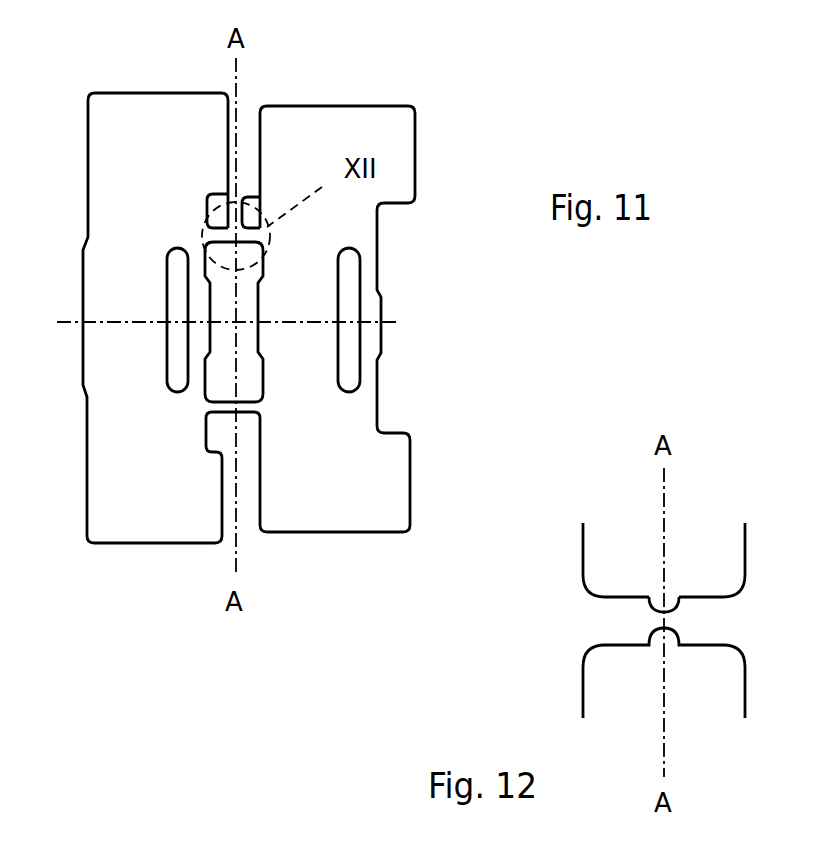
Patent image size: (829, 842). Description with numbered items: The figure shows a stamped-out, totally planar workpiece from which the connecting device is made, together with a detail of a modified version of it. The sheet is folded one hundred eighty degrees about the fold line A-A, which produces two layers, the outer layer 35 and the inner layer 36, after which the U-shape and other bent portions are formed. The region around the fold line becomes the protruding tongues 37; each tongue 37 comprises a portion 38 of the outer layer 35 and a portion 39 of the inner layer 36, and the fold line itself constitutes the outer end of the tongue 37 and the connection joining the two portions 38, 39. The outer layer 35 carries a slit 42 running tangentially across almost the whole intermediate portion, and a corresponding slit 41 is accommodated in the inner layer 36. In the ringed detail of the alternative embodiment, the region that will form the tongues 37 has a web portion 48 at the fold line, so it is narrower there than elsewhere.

In FIG. 11, the outer layer 35 is at (98, 167).
In FIG. 12, the outer layer 35 is at (531, 554).
In FIG. 11, the inner layer 36 is at (405, 167).
In FIG. 12, the inner layer 36 is at (764, 554).
In FIG. 11, the tongue 37 is at (234, 412).
In FIG. 11, the portion of the outer layer 38 is at (226, 232).
In FIG. 12, the portion of the outer layer 38 is at (626, 626).
In FIG. 11, the portion of the inner layer 39 is at (248, 232).
In FIG. 12, the portion of the inner layer 39 is at (704, 626).
In FIG. 11, the slit 41 is at (350, 285).
In FIG. 11, the slit 42 is at (168, 320).
In FIG. 12, the web portion 48 is at (673, 604).